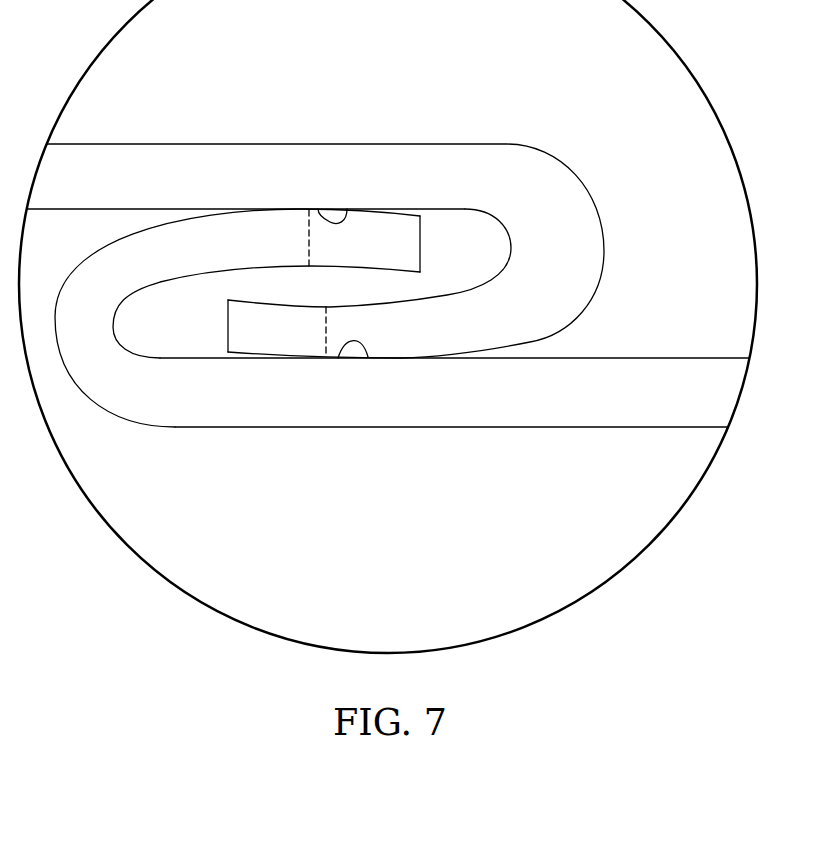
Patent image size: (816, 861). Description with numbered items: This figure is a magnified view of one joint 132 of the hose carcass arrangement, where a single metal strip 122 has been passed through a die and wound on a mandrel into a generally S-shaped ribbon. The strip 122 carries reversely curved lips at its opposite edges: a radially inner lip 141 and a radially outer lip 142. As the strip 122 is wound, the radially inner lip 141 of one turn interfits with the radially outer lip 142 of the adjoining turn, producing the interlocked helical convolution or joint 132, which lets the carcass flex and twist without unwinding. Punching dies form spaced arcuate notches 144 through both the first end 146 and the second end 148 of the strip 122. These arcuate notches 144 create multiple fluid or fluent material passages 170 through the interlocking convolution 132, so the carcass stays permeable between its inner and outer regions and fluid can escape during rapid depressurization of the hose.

The strip 122 is at (290, 175).
The joint 132 is at (642, 103).
The radially inner lip 141 is at (395, 336).
The radially outer lip 142 is at (247, 230).
The arcuate notches 144 is at (405, 230).
The first end 146 is at (422, 243).
The second end 148 is at (228, 327).
The fluid passages 170 is at (347, 209).